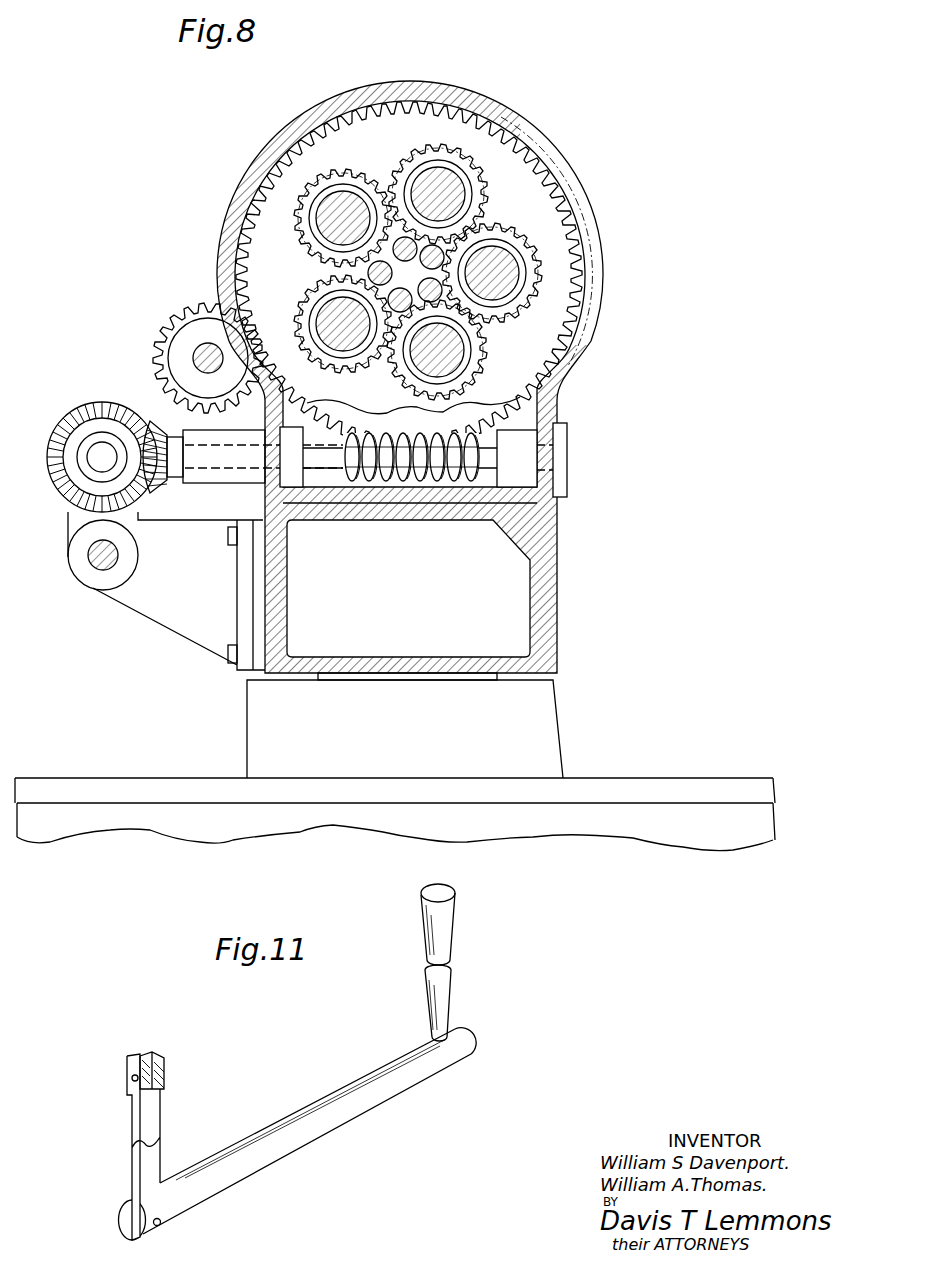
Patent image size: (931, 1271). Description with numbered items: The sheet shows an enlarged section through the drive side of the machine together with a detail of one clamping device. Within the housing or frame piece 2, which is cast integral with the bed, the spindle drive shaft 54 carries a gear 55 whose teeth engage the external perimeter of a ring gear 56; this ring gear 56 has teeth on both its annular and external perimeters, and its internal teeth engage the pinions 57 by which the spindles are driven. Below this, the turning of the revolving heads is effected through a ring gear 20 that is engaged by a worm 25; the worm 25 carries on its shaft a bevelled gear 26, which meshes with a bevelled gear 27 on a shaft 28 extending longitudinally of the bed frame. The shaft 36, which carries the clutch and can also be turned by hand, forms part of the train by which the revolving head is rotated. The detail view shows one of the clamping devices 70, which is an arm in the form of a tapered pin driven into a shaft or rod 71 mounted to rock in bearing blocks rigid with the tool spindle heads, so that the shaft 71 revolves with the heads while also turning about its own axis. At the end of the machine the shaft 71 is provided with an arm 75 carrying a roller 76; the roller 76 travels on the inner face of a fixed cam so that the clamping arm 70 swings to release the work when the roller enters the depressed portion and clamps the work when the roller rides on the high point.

In FIG. 8, the housing or frame piece 2 is at (285, 132).
In FIG. 8, the ring gear 56 is at (228, 238).
In FIG. 8, the pinion 57 is at (341, 170).
In FIG. 8, the shaft or rod 71 is at (442, 252).
In FIG. 11, the shaft or rod 71 is at (328, 1105).
In FIG. 8, the gear 55 is at (165, 326).
In FIG. 8, the spindle drive shaft 54 is at (207, 358).
In FIG. 8, the bevelled gear 27 is at (45, 418).
In FIG. 8, the shaft 28 is at (106, 457).
In FIG. 8, the bevelled gear 26 is at (72, 507).
In FIG. 8, the shaft 36 is at (100, 553).
In FIG. 8, the ring gear 20 is at (462, 443).
In FIG. 8, the worm 25 is at (460, 467).
In FIG. 11, the clamping device 70 is at (447, 930).
In FIG. 11, the arm 75 is at (125, 1115).
In FIG. 11, the roller 76 is at (150, 1058).